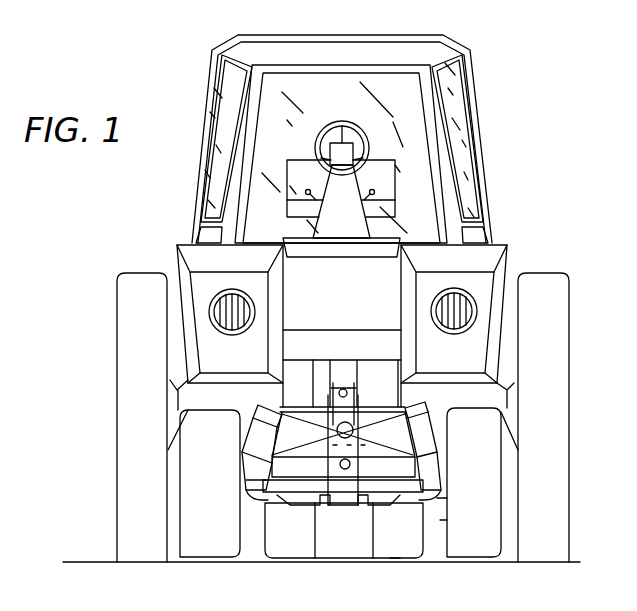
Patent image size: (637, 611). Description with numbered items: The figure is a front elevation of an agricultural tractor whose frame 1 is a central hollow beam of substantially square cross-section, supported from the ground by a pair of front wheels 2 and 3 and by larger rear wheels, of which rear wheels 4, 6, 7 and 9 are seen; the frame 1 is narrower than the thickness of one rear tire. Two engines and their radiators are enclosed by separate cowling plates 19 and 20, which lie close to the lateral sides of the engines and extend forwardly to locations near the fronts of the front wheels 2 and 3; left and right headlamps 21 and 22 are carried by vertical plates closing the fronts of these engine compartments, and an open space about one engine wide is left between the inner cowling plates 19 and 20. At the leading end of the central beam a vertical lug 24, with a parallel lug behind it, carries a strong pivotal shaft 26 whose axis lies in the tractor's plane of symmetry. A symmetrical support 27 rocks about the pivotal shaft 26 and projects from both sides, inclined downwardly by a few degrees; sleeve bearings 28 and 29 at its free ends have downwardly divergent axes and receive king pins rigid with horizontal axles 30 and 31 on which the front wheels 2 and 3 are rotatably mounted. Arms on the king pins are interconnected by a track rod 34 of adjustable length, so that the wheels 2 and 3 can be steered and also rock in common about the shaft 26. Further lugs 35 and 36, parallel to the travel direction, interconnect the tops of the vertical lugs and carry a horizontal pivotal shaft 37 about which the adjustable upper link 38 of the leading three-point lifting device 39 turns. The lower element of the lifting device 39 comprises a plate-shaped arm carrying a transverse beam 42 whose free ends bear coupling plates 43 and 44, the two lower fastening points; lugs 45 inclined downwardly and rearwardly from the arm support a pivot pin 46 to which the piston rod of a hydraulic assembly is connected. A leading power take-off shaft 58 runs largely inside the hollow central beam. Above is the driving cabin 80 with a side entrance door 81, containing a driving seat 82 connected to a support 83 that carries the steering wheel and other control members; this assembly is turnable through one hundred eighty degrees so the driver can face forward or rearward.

The frame 1 is at (342, 470).
The front wheel 2 is at (503, 488).
The front wheel 3 is at (185, 470).
The rear wheel 4 is at (566, 317).
The rear wheel 6 is at (396, 561).
The rear wheel 7 is at (295, 560).
The rear wheel 9 is at (117, 463).
The cowling plates 19 is at (476, 317).
The cowling plates 20 is at (215, 318).
The headlamp 21 is at (470, 330).
The headlamp 22 is at (228, 334).
The vertical lug 24 is at (330, 450).
The pivotal shaft 26 is at (353, 432).
The support 27 is at (248, 440).
The sleeve bearing 28 is at (428, 410).
The sleeve bearing 29 is at (258, 410).
The axle 30 is at (446, 483).
The axle 31 is at (245, 484).
The track rod 34 is at (300, 414).
The lug 35 is at (330, 386).
The lug 36 is at (357, 386).
The pivotal shaft 37 is at (380, 379).
The upper link 38 is at (343, 388).
The three-point lifting device 39 is at (265, 508).
The transverse beam 42 is at (445, 521).
The coupling plate 43 is at (443, 500).
The coupling plate 44 is at (268, 492).
The lugs 45 is at (329, 530).
The pivot pin 46 is at (398, 530).
The leading power take-off shaft 58 is at (362, 463).
The driving cabin 80 is at (488, 121).
The side entrance door 81 is at (478, 181).
The driving seat 82 is at (388, 196).
The support 83 is at (358, 250).